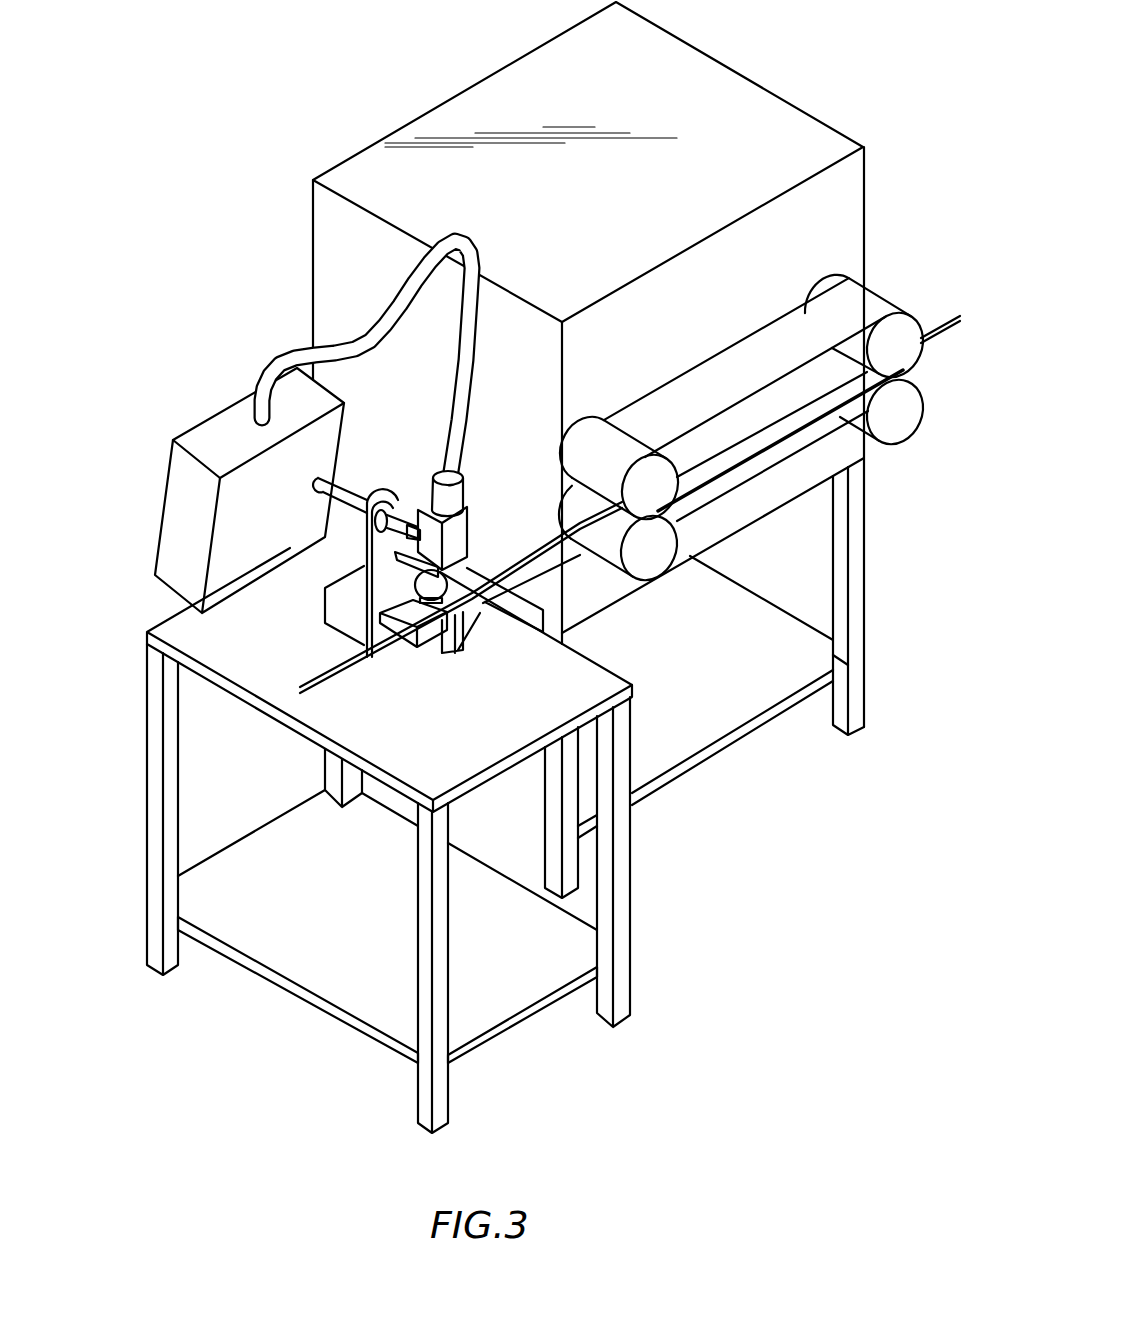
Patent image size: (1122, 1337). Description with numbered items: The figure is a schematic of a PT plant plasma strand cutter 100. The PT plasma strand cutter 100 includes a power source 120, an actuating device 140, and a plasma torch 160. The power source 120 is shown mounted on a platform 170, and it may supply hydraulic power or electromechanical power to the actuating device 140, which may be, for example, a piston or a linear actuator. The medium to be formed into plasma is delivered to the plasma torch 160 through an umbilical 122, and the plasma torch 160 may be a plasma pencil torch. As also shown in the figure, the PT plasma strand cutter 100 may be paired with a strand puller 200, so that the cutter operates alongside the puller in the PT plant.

The PT plant plasma strand cutter 100 is at (501, 467).
The power source 120 is at (207, 423).
The umbilical 122 is at (372, 322).
The actuating device 140 is at (515, 575).
The plasma torch 160 is at (468, 508).
The platform 170 is at (237, 688).
The strand puller 200 is at (797, 120).